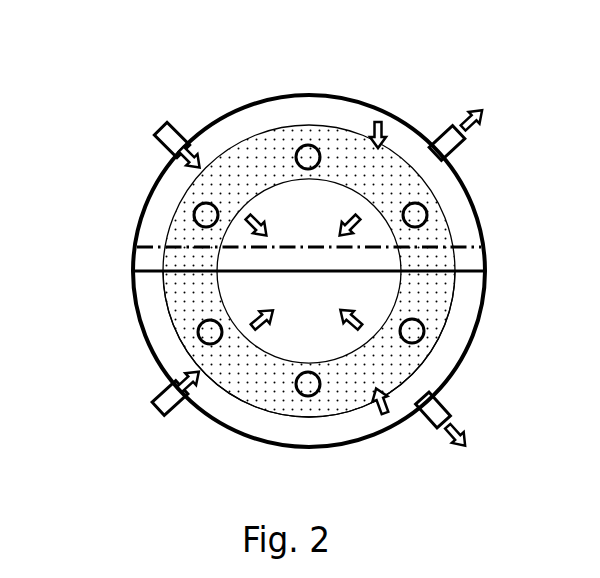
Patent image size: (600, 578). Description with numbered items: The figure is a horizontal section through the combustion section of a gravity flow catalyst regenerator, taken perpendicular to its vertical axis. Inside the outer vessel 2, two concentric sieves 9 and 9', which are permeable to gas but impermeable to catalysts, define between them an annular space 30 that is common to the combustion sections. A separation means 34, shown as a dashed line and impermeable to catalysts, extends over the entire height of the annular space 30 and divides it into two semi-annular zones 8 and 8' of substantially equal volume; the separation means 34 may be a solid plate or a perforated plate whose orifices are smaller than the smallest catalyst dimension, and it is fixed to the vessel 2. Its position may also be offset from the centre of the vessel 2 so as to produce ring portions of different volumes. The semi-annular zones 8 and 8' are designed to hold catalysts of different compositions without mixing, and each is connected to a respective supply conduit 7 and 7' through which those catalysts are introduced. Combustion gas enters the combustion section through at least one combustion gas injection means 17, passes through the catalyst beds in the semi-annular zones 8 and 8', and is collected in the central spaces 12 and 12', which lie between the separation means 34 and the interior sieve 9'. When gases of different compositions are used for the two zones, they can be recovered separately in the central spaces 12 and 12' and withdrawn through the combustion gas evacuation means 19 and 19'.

The vessel 2 is at (320, 99).
The supply conduit 7 is at (311, 401).
The supply conduit 7' is at (263, 186).
The semi-annular zone 8 is at (431, 383).
The semi-annular zone 8' is at (434, 159).
The sieve 9 is at (309, 238).
The interior sieve 9' is at (342, 344).
The central space 12 is at (306, 314).
The central space 12' is at (302, 222).
The combustion gas injection means 17 is at (192, 130).
The combustion gas evacuation means 19 is at (419, 437).
The combustion gas evacuation means 19' is at (454, 109).
The annular space 30 is at (114, 323).
The separation means 34 is at (148, 270).